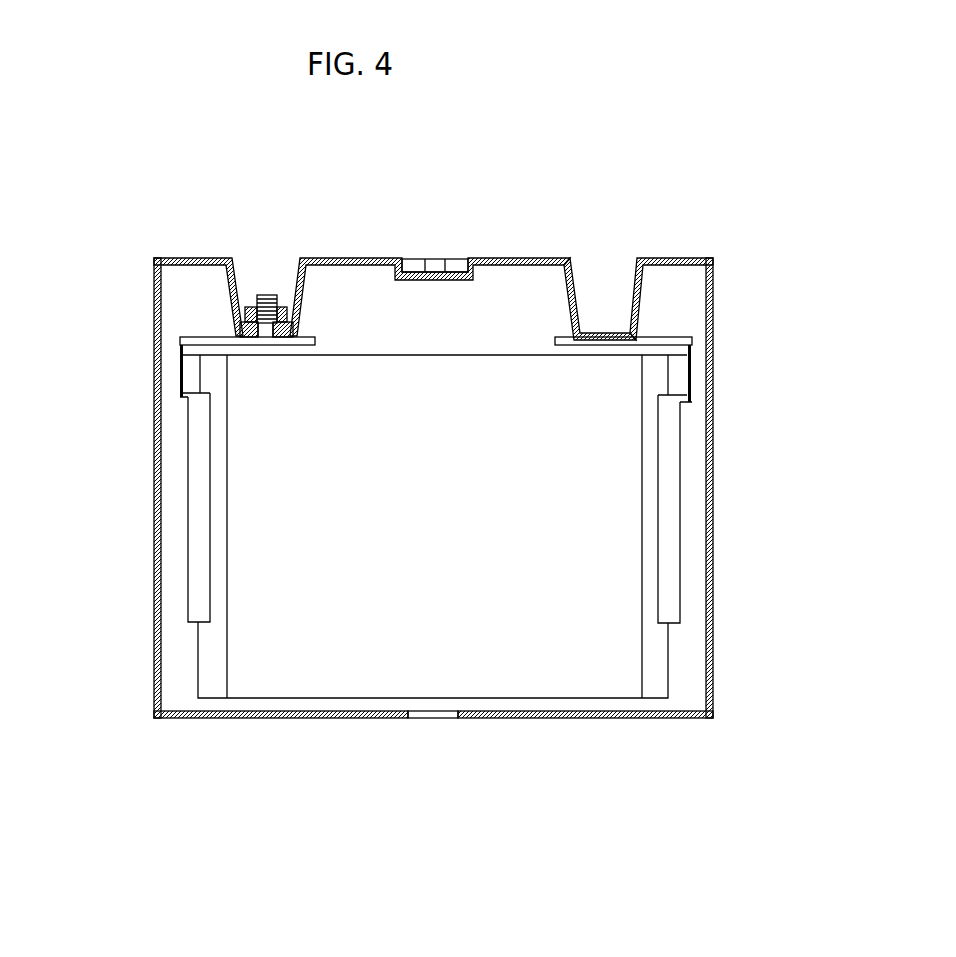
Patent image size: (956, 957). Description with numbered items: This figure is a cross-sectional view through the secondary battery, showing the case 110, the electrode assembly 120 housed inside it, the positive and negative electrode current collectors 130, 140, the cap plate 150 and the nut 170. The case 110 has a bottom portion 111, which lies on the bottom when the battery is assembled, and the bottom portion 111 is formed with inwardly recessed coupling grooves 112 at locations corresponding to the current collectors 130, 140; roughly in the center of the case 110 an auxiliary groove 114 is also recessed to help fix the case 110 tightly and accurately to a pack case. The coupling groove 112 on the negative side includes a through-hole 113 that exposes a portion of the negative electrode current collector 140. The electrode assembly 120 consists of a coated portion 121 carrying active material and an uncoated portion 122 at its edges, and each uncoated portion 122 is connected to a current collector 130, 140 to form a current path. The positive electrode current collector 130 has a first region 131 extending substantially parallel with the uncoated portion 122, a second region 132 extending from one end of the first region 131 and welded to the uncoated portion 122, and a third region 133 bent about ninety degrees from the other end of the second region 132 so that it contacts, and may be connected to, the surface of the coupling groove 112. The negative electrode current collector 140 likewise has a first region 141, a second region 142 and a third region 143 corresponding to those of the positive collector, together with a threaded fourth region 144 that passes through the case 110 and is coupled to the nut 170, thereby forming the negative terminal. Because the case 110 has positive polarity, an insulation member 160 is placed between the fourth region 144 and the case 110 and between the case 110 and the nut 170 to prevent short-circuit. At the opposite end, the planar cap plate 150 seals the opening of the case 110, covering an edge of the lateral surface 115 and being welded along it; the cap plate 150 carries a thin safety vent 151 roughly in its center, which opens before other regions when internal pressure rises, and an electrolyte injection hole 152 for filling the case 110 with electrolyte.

The case 110 is at (470, 482).
The bottom portion 111 is at (463, 263).
The coupling groove 112 is at (580, 300).
The through-hole 113 is at (264, 328).
The auxiliary groove 114 is at (434, 266).
The lateral surface 115 is at (713, 530).
The electrode assembly 120 is at (512, 528).
The coated portion 121 is at (618, 655).
The uncoated portion 122 is at (658, 683).
The positive electrode current collector 130 is at (698, 462).
The first region 131 is at (689, 372).
The second region 132 is at (722, 509).
The third region 133 is at (672, 340).
The negative electrode current collector 140 is at (165, 452).
The first region 141 is at (182, 372).
The second region 142 is at (196, 437).
The third region 143 is at (200, 338).
The fourth region 144 is at (257, 296).
The cap plate 150 is at (433, 750).
The safety vent 151 is at (432, 718).
The electrolyte injection hole 152 is at (530, 718).
The insulation member 160 is at (283, 338).
The nut 170 is at (266, 294).